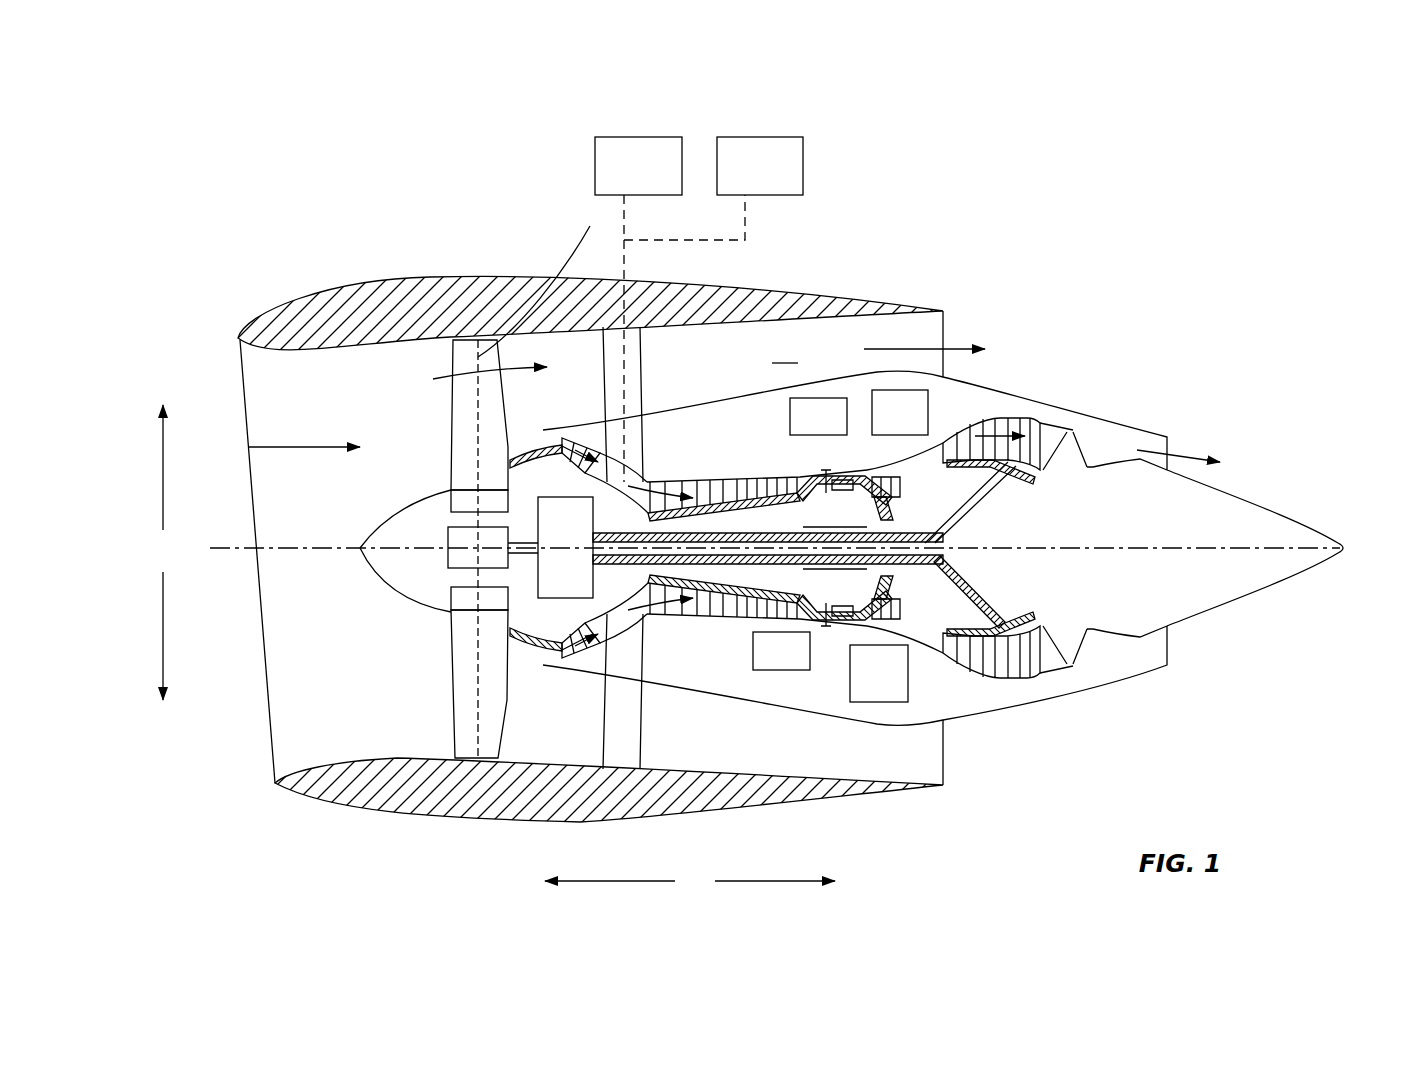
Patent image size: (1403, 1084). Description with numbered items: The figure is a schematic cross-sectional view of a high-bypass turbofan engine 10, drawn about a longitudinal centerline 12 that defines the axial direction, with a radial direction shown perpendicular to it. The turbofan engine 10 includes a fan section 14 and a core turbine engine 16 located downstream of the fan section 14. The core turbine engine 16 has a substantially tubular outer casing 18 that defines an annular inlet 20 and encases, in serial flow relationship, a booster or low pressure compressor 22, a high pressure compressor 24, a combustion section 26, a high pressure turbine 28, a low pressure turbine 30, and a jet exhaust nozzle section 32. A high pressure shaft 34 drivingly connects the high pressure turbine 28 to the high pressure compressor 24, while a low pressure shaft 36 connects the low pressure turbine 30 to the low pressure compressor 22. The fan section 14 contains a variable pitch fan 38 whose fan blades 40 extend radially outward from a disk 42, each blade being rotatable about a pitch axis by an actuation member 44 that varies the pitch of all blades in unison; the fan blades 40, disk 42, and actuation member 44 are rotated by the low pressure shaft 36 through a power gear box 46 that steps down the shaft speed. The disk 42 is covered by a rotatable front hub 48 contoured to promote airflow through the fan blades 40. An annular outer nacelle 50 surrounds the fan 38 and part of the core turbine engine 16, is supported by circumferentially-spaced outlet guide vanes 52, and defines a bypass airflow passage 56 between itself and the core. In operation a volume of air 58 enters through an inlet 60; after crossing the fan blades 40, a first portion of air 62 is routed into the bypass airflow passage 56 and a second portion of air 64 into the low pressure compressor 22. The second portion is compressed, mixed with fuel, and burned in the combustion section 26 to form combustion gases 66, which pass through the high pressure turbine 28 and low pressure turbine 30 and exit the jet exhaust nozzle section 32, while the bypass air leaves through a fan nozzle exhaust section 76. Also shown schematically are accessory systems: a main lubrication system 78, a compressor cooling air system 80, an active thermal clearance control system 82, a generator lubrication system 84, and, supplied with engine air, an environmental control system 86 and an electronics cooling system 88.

The turbofan engine 10 is at (1087, 293).
The longitudinal centerline 12 is at (1110, 547).
The fan section 14 is at (408, 355).
The core turbine engine 16 is at (762, 433).
The outer casing 18 is at (800, 713).
The annular inlet 20 is at (548, 653).
The low pressure compressor 22 is at (600, 620).
The high pressure compressor 24 is at (672, 608).
The combustion section 26 is at (843, 615).
The high pressure turbine 28 is at (907, 619).
The low pressure turbine 30 is at (1027, 678).
The jet exhaust nozzle section 32 is at (1087, 658).
The high pressure shaft 34 is at (847, 520).
The low pressure shaft 36 is at (943, 530).
The variable pitch fan 38 is at (418, 601).
The fan blades 40 is at (450, 700).
The disk 42 is at (467, 502).
The actuation member 44 is at (448, 527).
The power gear box 46 is at (578, 513).
The rotatable front hub 48 is at (373, 567).
The outer nacelle 50 is at (500, 820).
The outlet guide vanes 52 is at (643, 357).
The bypass airflow passage 56 is at (785, 350).
The volume of air 58 is at (290, 447).
The inlet 60 is at (270, 757).
The first portion of air 62 is at (467, 373).
The second portion of air 64 is at (525, 445).
The combustion gases 66 is at (903, 477).
The fan nozzle exhaust section 76 is at (932, 335).
The main lubrication system 78 is at (908, 688).
The compressor cooling air system 80 is at (777, 670).
The active thermal clearance control system 82 is at (867, 390).
The generator lubrication system 84 is at (813, 398).
The environmental control system 86 is at (645, 137).
The electronics cooling system 88 is at (769, 137).